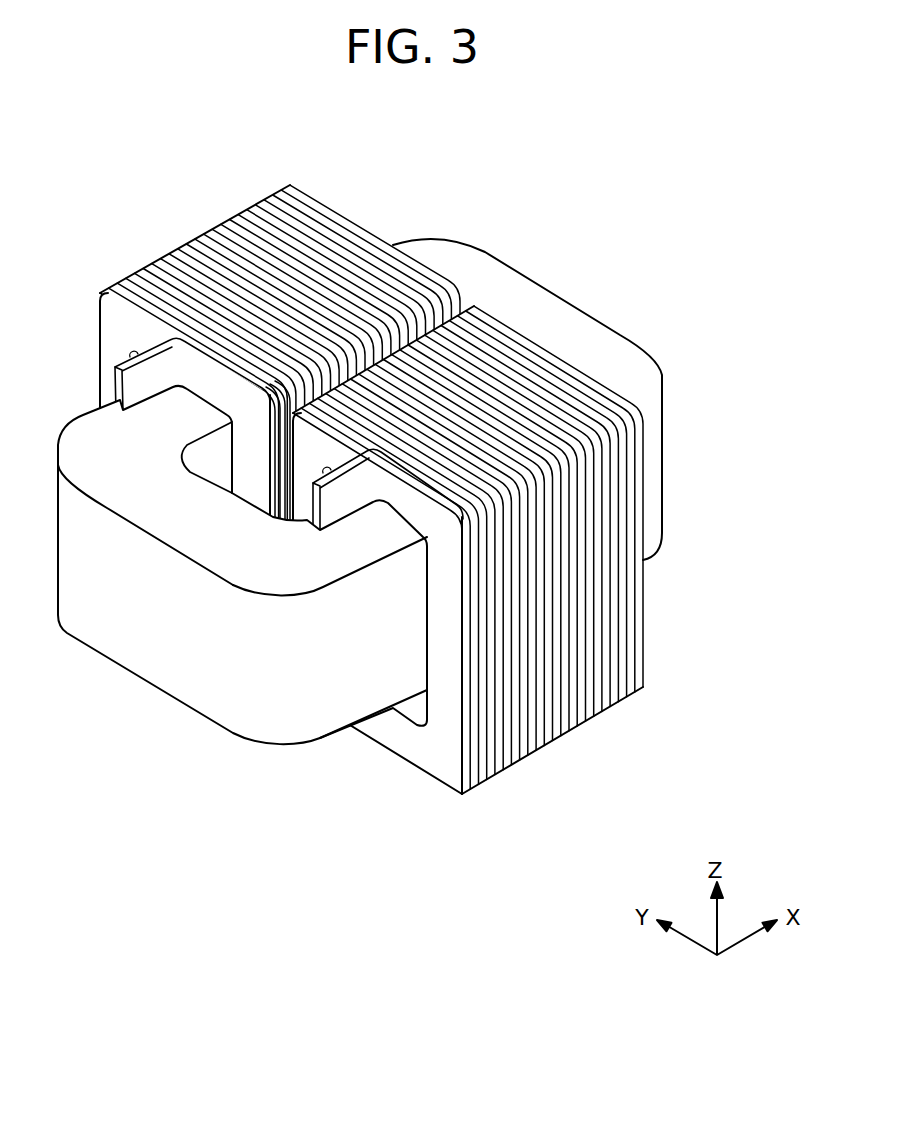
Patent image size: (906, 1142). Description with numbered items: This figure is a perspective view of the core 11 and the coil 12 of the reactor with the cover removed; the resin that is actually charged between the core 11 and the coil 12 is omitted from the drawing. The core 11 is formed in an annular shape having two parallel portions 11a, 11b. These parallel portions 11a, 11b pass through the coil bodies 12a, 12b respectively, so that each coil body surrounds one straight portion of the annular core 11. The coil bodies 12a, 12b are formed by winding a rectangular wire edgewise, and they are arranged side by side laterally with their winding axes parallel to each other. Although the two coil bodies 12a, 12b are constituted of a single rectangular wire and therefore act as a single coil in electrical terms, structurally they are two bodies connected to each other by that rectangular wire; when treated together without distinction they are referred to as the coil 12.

The core 11 is at (360, 541).
The parallel portion 11a is at (173, 427).
The parallel portion 11b is at (373, 537).
The coil 12 is at (412, 488).
The coil body 12a is at (357, 222).
The coil body 12b is at (547, 345).